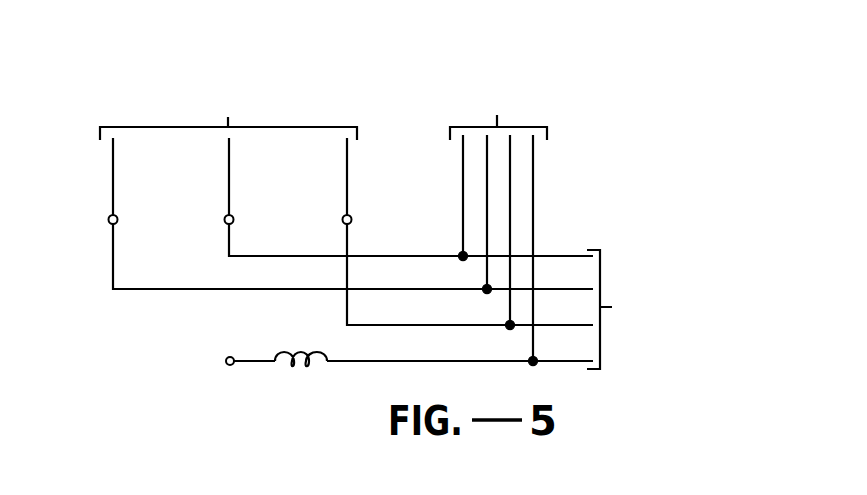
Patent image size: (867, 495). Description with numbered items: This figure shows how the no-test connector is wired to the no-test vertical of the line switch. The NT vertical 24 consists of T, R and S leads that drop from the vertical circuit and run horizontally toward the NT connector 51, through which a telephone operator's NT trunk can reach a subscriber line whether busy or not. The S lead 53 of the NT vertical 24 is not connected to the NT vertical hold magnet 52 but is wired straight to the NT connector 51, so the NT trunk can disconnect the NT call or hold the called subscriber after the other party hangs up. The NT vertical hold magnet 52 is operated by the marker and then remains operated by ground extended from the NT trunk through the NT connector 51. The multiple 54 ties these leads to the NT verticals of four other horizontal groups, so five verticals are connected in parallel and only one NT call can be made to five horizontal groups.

The no-test vertical 24 is at (118, 124).
The S lead 53 is at (349, 188).
The multiple 54 is at (460, 126).
The no-test connector circuit 51 is at (600, 269).
The no-test vertical hold magnet 52 is at (295, 374).